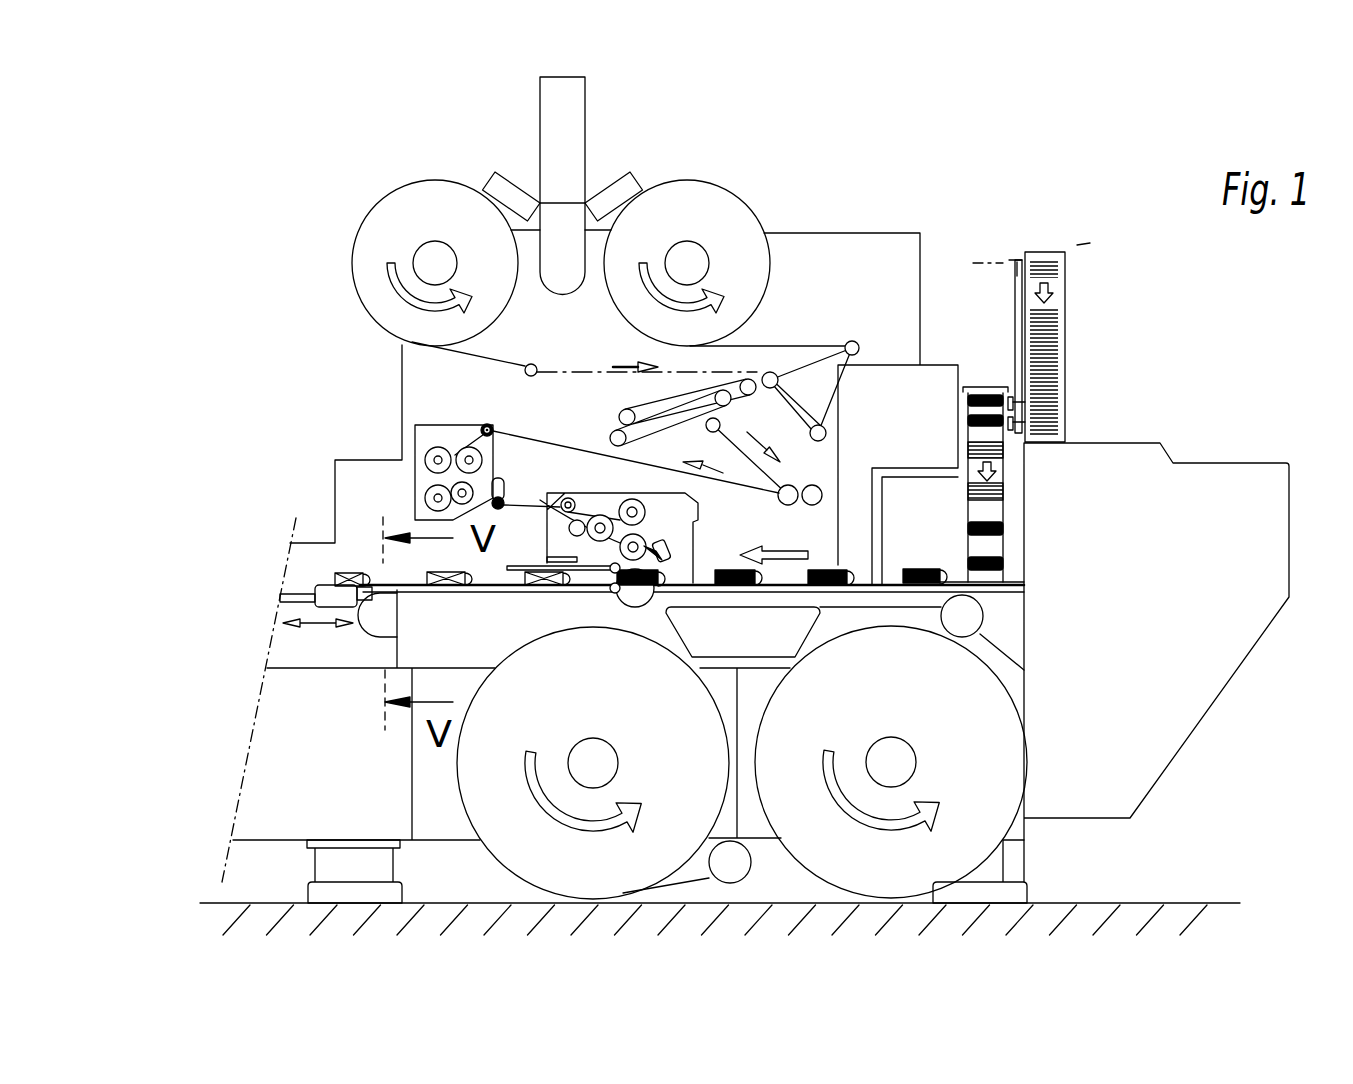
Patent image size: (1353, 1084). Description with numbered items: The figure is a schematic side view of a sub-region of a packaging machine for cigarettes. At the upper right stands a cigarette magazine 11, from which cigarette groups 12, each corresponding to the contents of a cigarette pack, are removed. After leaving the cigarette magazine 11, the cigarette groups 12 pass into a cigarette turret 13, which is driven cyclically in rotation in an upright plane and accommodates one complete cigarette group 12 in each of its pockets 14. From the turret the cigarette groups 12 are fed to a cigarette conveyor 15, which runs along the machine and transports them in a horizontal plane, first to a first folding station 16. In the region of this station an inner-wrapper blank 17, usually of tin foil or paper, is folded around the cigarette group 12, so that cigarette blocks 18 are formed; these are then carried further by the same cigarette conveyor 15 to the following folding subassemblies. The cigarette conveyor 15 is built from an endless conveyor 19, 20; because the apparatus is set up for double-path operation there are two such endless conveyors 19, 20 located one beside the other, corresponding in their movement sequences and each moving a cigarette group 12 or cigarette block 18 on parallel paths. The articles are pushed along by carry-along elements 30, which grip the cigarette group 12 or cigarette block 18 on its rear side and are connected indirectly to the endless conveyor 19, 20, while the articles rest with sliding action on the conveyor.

The cigarette magazine 11 is at (1113, 327).
The cigarette groups 12 is at (1005, 530).
The cigarette turret 13 is at (991, 351).
The pockets 14 is at (1005, 557).
The cigarette conveyor 15 is at (828, 543).
The first folding station 16 is at (673, 533).
The inner-wrapper blank 17 is at (543, 507).
The cigarette blocks 18 is at (427, 573).
The endless conveyor 19 is at (440, 609).
The endless conveyor 20 is at (316, 610).
The carry-along elements 30 is at (1005, 582).